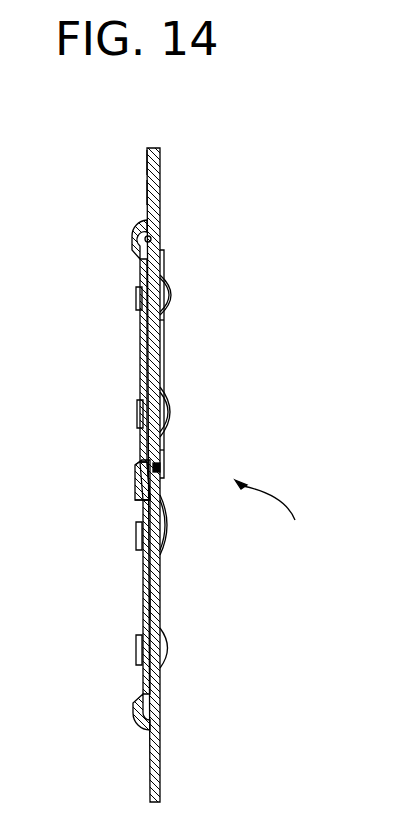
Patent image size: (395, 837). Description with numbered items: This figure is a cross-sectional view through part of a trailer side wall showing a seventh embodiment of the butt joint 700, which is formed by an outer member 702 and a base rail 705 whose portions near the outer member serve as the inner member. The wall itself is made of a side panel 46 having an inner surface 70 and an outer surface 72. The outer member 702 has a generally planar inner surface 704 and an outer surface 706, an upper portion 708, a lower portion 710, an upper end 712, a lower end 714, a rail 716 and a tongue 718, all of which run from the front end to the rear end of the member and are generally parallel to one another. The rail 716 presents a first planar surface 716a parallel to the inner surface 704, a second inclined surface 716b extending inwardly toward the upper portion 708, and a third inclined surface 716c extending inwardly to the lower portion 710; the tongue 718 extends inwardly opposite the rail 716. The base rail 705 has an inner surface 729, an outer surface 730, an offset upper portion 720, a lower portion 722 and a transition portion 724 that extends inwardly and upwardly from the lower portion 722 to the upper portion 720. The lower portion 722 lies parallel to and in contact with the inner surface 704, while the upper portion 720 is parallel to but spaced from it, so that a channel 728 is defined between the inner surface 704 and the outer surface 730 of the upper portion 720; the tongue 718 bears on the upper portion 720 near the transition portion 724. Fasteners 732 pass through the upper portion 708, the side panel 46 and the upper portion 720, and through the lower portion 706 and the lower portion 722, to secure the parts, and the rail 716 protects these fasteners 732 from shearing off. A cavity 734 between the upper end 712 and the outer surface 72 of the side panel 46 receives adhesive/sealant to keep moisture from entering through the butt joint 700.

The side panel 46 is at (147, 160).
The outer surface 72 is at (147, 192).
The inner surface 70 is at (163, 178).
The upper end 712 is at (135, 240).
The cavity 734 is at (150, 240).
The upper portion 708 is at (140, 283).
The outer surface 730 is at (165, 282).
The fasteners 732 is at (178, 298).
The inner surface 704 is at (143, 328).
The inner surface 729 is at (158, 330).
The offset upper portion 720 is at (160, 352).
The outer member 702 is at (143, 392).
The channel 728 is at (165, 385).
The rail 716 is at (138, 462).
The second inclined surface 716b is at (152, 466).
The tongue 718 is at (165, 450).
The first planar surface 716a is at (134, 478).
The transition portion 724 is at (163, 500).
The third inclined surface 716c is at (137, 505).
The lower portion 710 is at (146, 566).
The lower portion 722 is at (170, 560).
The outer surface 706 is at (146, 608).
The base rail 705 is at (158, 600).
The lower end 714 is at (133, 720).
The butt joint 700 is at (278, 516).